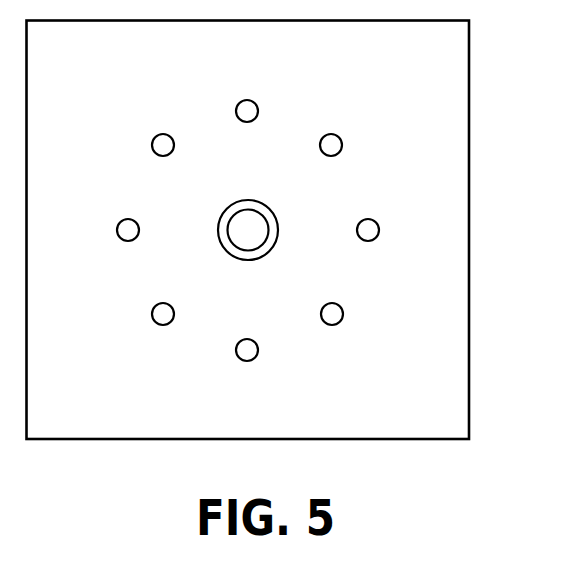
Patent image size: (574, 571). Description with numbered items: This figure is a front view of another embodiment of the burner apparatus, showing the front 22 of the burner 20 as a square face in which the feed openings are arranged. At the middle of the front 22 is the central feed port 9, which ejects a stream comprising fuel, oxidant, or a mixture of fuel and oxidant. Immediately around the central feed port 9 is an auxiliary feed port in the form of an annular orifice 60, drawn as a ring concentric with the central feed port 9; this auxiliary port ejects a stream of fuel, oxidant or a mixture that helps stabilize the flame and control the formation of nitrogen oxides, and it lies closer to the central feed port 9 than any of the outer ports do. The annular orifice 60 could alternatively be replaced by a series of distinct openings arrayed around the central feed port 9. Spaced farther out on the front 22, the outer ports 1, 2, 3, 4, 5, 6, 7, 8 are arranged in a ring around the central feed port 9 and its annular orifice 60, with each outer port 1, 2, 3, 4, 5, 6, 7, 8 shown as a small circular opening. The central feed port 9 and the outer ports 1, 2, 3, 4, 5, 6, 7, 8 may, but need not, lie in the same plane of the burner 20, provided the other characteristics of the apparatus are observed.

The burner 20 is at (471, 66).
The front 22 is at (78, 66).
The annular orifice 60 is at (247, 200).
The central feed port 9 is at (241, 241).
The outer port 1 is at (256, 103).
The outer port 2 is at (341, 138).
The outer port 3 is at (366, 219).
The outer port 4 is at (343, 317).
The outer port 5 is at (257, 353).
The outer port 6 is at (152, 318).
The outer port 7 is at (117, 228).
The outer port 8 is at (166, 134).